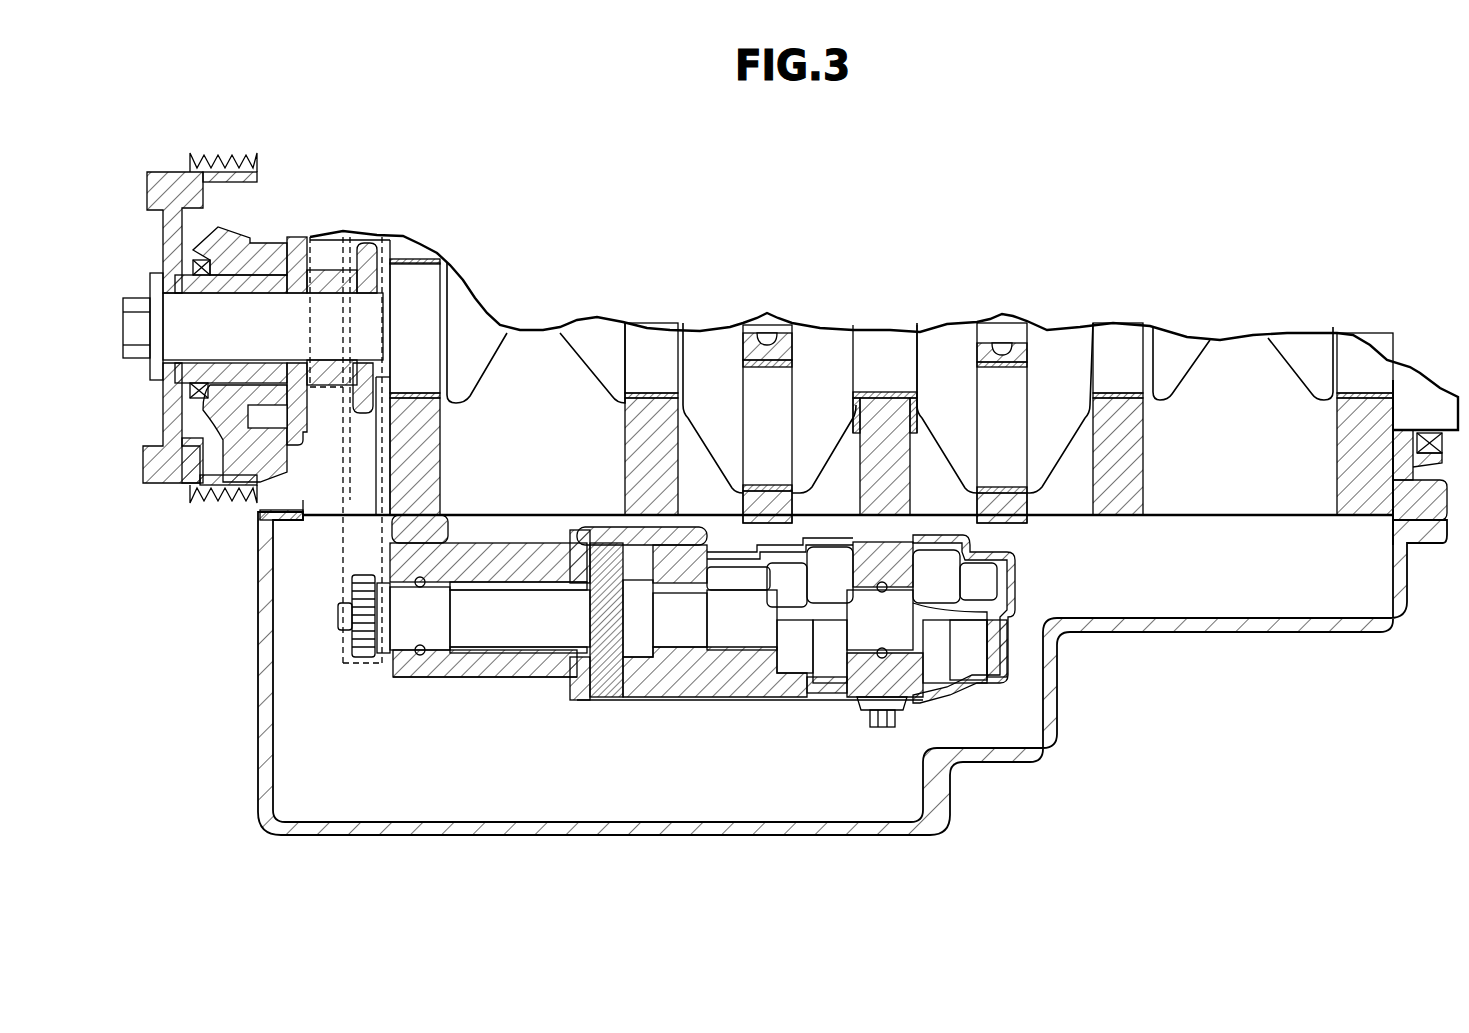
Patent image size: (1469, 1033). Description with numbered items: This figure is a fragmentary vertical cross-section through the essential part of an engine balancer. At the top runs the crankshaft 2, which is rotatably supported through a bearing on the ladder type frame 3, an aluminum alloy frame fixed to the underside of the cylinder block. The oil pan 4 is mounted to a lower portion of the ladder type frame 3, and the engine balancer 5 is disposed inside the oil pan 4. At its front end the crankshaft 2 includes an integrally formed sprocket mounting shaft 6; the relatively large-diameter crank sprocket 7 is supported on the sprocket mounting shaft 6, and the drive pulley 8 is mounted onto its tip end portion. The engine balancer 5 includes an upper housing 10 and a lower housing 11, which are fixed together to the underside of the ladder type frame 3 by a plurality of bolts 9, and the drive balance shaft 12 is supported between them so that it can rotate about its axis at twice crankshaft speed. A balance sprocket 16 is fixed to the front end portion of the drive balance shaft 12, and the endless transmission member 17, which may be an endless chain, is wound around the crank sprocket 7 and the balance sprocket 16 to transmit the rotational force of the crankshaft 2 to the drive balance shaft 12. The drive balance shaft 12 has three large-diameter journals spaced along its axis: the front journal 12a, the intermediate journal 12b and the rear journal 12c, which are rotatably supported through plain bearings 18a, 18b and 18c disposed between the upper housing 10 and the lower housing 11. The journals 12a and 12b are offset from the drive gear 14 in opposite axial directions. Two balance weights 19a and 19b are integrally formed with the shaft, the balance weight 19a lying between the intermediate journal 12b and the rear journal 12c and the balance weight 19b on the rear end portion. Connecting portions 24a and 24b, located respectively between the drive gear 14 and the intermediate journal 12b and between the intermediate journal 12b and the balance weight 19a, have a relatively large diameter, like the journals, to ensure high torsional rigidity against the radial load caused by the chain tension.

The crankshaft 2 is at (417, 293).
The ladder type frame 3 is at (1362, 497).
The oil pan 4 is at (1060, 682).
The engine balancer 5 is at (694, 704).
The sprocket mounting shaft 6 is at (265, 313).
The crank sprocket 7 is at (363, 258).
The drive pulley 8 is at (175, 187).
The bolts 9 is at (879, 727).
The upper housing 10 is at (1008, 580).
The lower housing 11 is at (735, 700).
The drive balance shaft 12 is at (520, 620).
The front journal 12a is at (430, 625).
The intermediate journal 12b is at (670, 630).
The rear journal 12c is at (882, 695).
The drive gear 14 is at (605, 660).
The balance sprocket 16 is at (365, 650).
The endless transmission member 17 is at (345, 546).
The plain bearing 18a is at (460, 542).
The plain bearing 18b is at (692, 545).
The plain bearing 18c is at (868, 580).
The balance weight 19a is at (831, 650).
The balance weight 19b is at (938, 647).
The connecting portion 24a is at (640, 630).
The connecting portion 24b is at (750, 630).